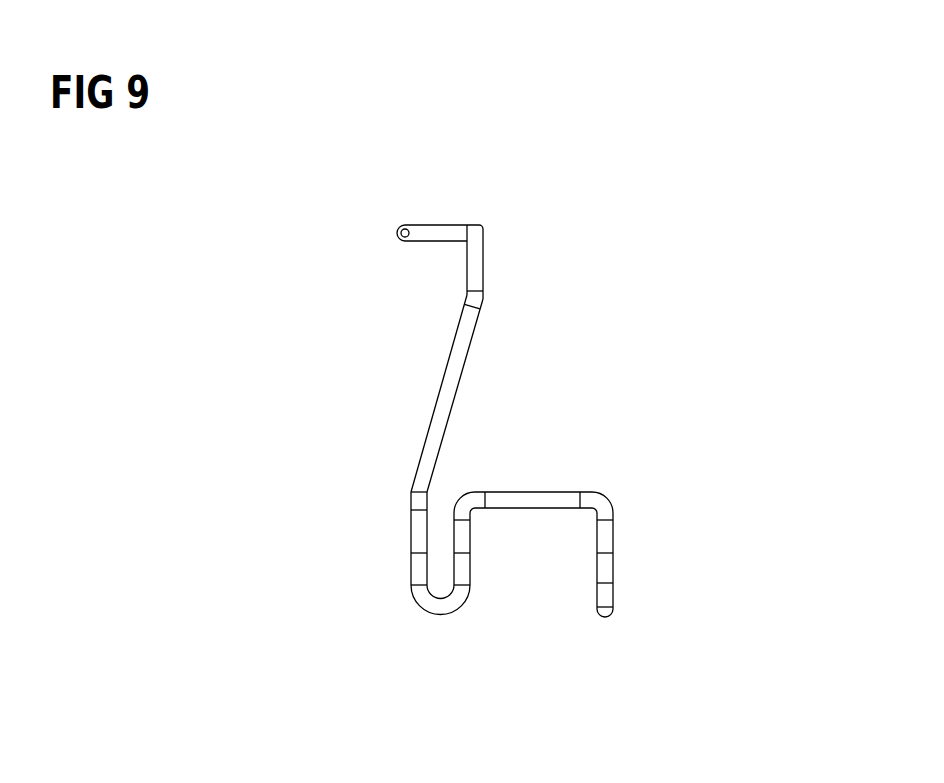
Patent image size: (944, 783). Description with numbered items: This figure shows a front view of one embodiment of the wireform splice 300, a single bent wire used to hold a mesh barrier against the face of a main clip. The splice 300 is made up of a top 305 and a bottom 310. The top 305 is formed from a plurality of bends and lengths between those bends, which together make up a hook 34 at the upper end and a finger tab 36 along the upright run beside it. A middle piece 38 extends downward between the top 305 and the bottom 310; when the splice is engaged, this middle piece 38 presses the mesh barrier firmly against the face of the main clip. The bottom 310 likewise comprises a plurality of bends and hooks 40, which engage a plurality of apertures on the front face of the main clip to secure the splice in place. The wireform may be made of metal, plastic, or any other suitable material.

The wireform splice 300 is at (223, 360).
The top 305 is at (420, 167).
The bottom 310 is at (614, 697).
The hook 34 is at (369, 230).
The finger tab 36 is at (517, 250).
The middle piece 38 is at (414, 384).
The hooks 40 is at (569, 631).